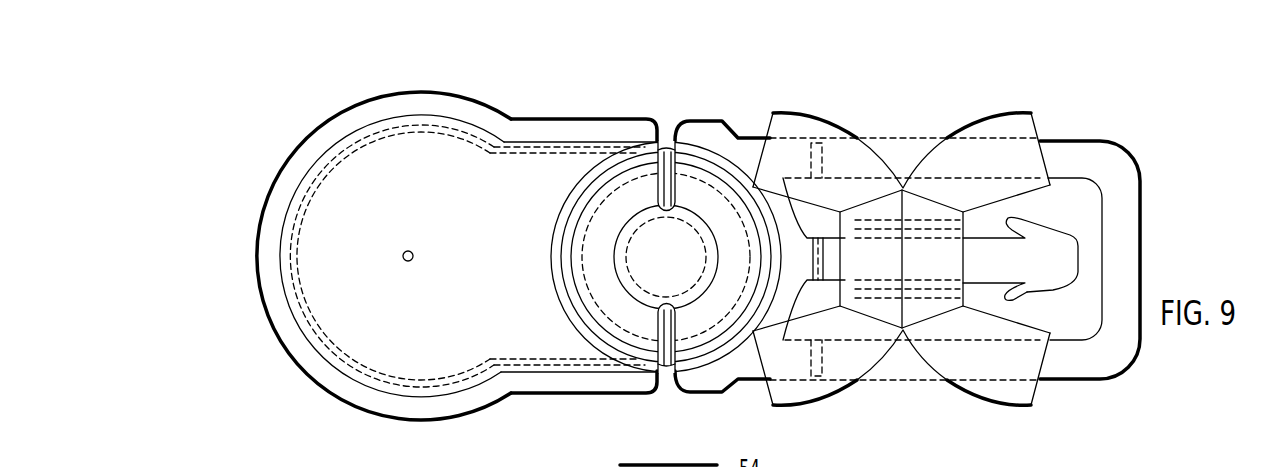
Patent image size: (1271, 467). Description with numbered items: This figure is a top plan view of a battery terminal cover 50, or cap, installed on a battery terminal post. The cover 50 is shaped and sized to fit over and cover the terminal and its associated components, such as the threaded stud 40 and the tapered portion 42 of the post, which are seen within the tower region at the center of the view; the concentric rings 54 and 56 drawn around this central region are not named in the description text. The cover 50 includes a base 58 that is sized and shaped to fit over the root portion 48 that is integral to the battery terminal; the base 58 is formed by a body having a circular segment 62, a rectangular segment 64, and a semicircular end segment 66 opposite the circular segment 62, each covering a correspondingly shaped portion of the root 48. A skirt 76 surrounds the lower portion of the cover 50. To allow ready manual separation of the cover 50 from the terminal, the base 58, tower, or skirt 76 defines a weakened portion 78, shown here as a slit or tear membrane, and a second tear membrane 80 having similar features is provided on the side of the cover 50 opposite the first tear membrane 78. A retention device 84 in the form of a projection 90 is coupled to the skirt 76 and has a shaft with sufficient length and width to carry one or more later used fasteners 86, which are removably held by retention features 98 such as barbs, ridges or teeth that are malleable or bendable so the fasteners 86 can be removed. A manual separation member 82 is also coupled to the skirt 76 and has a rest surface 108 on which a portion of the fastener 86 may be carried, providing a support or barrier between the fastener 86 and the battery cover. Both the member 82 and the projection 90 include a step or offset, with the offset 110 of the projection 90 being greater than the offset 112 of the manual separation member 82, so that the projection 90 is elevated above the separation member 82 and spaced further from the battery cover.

The threaded stud 40 is at (656, 262).
The tapered portion 42 is at (566, 283).
The root portion 48 is at (403, 203).
The battery terminal cover 50 is at (587, 105).
The outer ring 54 is at (627, 225).
The seal ring 56 is at (592, 246).
The base 58 is at (282, 277).
The circular segment 62 is at (333, 203).
The rectangular segment 64 is at (544, 330).
The semicircular end segment 66 is at (721, 352).
The skirt 76 is at (403, 407).
The weakened portion 78 is at (663, 371).
The second tear membrane 80 is at (667, 141).
The manual separation member 82 is at (1130, 220).
The retention device 84 is at (1054, 206).
The fastener 86 is at (941, 307).
The projection 90 is at (1015, 260).
The retention features 98 is at (1027, 292).
The rest surface 108 is at (992, 148).
The offset of projection 110 is at (815, 248).
The offset of manual separation member 112 is at (815, 142).